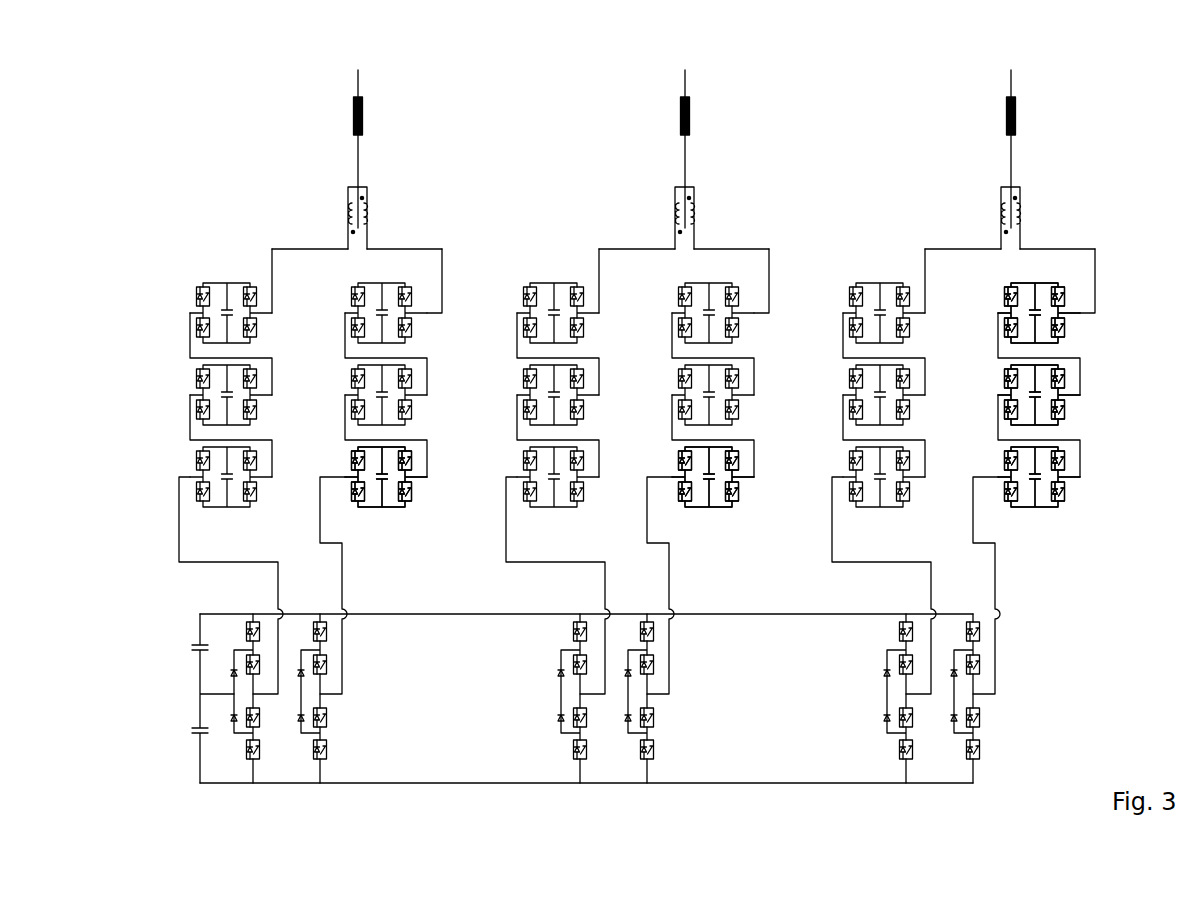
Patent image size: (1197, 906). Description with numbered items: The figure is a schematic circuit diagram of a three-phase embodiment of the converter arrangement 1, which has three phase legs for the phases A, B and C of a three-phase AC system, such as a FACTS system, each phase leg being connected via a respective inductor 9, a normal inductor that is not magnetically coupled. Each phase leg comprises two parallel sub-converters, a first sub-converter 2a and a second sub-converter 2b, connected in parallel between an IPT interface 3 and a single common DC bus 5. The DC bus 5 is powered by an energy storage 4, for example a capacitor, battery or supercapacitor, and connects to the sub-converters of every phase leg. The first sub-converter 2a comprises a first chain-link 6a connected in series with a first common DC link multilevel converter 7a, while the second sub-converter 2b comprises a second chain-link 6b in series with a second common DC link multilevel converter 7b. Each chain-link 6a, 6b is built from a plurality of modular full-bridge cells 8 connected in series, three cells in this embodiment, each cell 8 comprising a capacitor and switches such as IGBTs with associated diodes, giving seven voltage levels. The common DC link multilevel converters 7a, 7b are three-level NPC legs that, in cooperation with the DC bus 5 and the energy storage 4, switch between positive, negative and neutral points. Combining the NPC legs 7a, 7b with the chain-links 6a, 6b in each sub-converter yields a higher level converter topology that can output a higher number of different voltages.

The converter arrangement 1 is at (1161, 138).
The first sub-converter 2a is at (189, 212).
The second sub-converter 2b is at (451, 190).
The IPT interface 3 is at (362, 198).
The energy storage 4 is at (163, 697).
The common DC bus 5 is at (437, 615).
The first chain-link 6a is at (228, 262).
The second chain-link 6b is at (458, 262).
The first common DC link multilevel converter 7a is at (252, 792).
The second common DC link multilevel converter 7b is at (322, 793).
The cell 8 is at (429, 506).
The inductor 9 is at (353, 112).